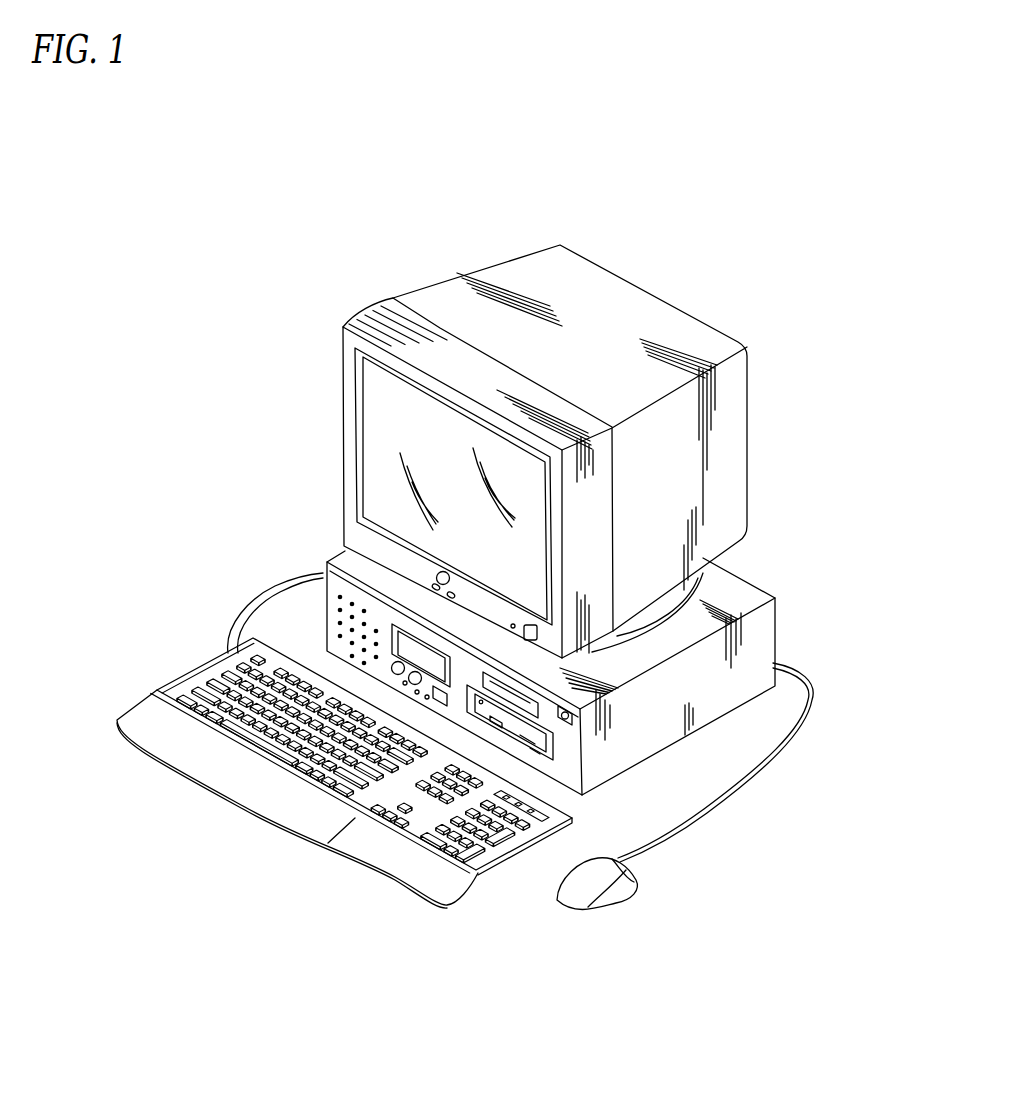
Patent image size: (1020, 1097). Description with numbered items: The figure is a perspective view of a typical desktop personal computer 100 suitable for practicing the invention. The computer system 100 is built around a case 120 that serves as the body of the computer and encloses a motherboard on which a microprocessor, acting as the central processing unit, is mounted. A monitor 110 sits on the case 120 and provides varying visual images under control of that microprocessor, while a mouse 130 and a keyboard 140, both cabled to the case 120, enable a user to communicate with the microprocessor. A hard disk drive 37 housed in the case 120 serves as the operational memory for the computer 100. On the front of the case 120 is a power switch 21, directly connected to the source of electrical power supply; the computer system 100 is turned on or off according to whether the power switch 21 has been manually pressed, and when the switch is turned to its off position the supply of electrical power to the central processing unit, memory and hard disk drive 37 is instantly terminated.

The personal computer 100 is at (729, 190).
The monitor 110 is at (747, 379).
The case 120 is at (775, 627).
The mouse 130 is at (625, 897).
The keyboard 140 is at (517, 863).
The hard disk drive 37 is at (392, 641).
The power switch 21 is at (573, 725).